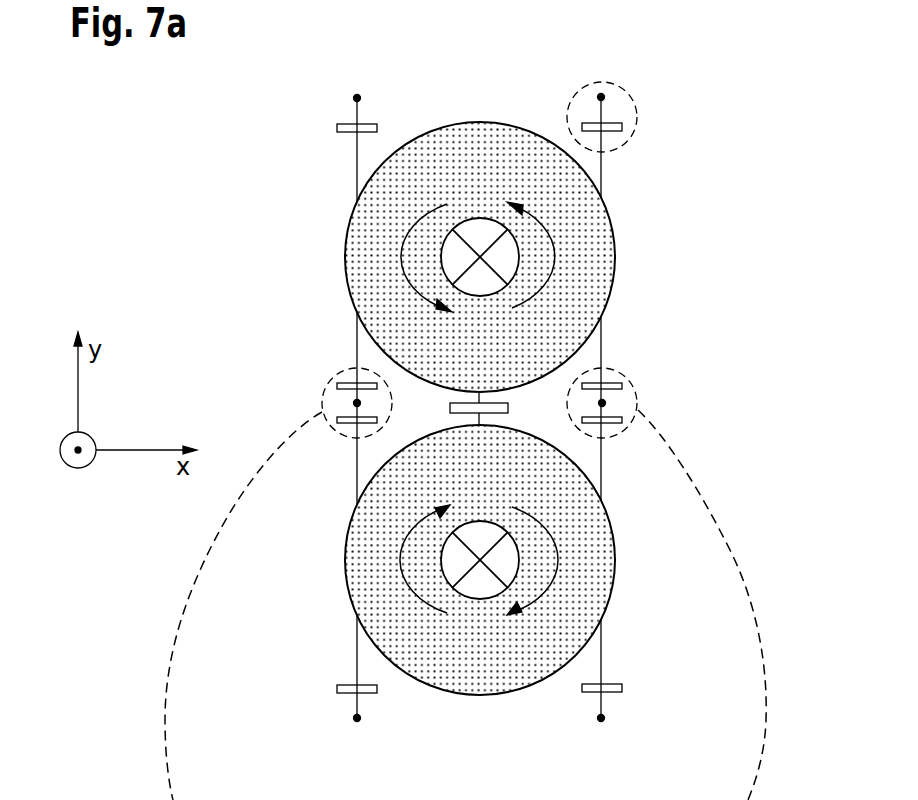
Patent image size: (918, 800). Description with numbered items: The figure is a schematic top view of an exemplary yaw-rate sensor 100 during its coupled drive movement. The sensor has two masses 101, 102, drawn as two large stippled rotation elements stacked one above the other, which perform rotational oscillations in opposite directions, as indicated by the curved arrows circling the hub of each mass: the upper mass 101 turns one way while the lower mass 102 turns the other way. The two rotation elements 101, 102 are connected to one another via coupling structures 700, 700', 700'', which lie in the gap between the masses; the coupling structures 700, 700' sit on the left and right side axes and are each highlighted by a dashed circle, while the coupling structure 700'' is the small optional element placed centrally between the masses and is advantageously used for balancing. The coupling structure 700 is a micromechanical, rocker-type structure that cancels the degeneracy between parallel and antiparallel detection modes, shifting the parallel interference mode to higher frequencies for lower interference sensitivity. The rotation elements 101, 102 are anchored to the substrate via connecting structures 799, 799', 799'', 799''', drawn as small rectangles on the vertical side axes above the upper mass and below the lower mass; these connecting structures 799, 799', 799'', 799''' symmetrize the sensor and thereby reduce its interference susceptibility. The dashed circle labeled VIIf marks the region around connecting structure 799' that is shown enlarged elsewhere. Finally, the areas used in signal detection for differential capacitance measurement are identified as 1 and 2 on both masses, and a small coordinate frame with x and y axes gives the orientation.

The yaw-rate sensor 100 is at (722, 165).
The mass 101 is at (438, 145).
The mass 102 is at (593, 527).
The connecting structure 799 is at (318, 129).
The connecting structure 799' is at (641, 126).
The connecting structure 799'' is at (318, 689).
The connecting structure 799''' is at (647, 686).
The coupling structure 700 is at (633, 403).
The coupling structure 700' is at (325, 403).
The coupling structure 700'' is at (383, 453).
The signal detection area 1 is at (475, 410).
The signal detection area 2 is at (475, 410).
The enlarged-view region VIIf is at (660, 73).